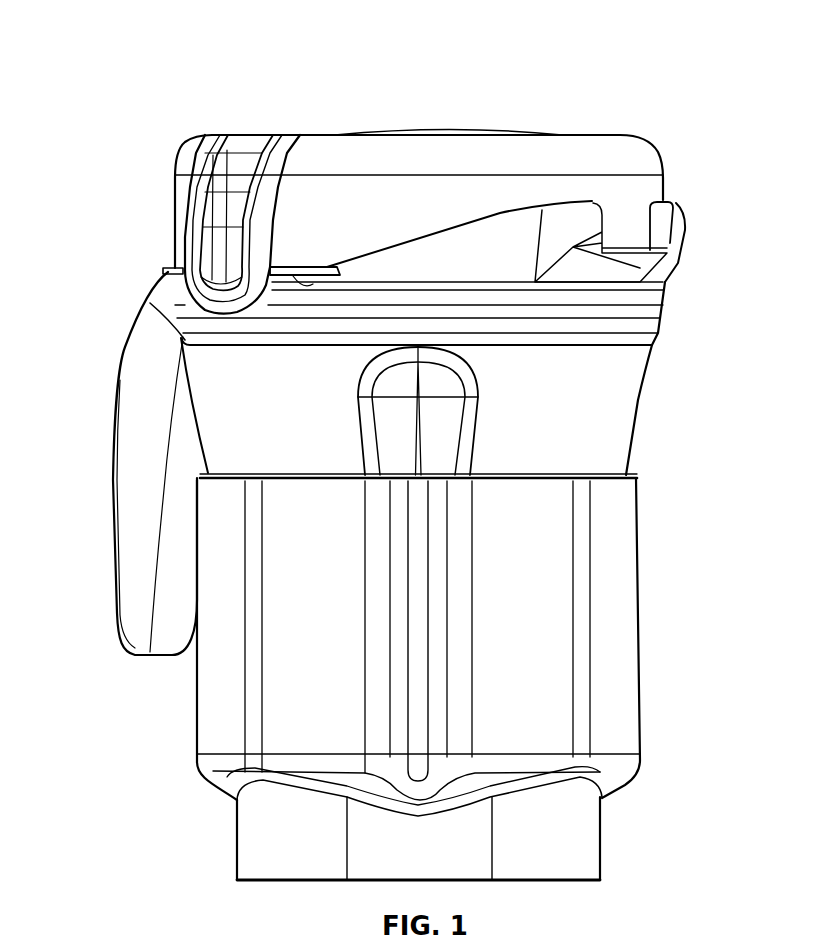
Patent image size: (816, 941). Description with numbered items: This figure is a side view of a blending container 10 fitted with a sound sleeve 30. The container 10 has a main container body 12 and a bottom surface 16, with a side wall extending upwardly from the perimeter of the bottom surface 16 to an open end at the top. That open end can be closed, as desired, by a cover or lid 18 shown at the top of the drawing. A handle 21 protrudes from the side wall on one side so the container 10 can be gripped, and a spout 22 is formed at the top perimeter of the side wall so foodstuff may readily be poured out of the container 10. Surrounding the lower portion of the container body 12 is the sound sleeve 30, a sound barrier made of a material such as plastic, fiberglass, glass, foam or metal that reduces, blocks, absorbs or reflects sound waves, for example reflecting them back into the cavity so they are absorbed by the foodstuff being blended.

The container 10 is at (127, 66).
The main container body 12 is at (612, 383).
The bottom surface 16 is at (590, 827).
The cover or lid 18 is at (635, 160).
The handle 21 is at (148, 370).
The spout 22 is at (658, 218).
The sound sleeve 30 is at (222, 688).